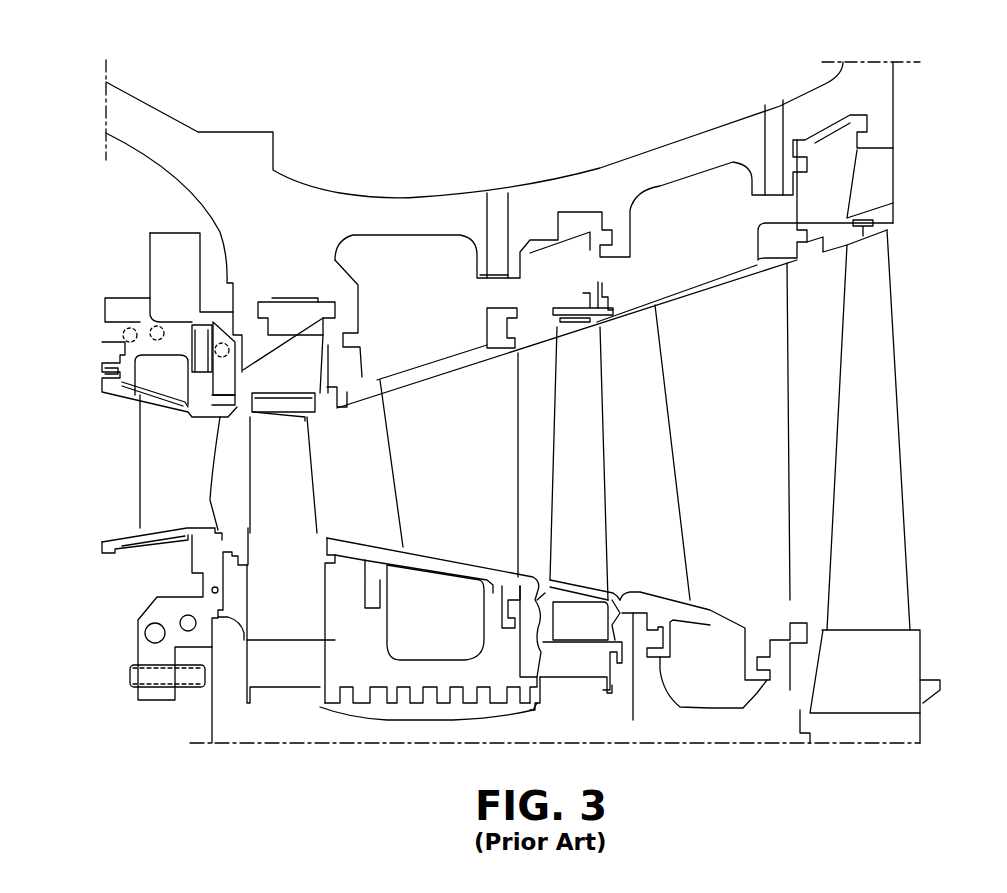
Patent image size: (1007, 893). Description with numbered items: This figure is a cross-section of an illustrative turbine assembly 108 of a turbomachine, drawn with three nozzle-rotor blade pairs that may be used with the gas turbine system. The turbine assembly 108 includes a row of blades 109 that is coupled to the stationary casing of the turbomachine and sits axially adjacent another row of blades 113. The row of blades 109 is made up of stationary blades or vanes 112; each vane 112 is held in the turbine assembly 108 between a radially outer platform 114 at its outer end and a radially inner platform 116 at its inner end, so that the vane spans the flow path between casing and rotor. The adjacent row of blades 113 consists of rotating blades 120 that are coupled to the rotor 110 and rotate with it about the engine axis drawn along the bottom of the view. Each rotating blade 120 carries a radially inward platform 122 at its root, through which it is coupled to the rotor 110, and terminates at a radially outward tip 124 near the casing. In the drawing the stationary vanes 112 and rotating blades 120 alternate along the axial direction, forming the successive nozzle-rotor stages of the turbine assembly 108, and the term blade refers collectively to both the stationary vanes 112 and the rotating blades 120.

The turbine assembly 108 is at (425, 185).
The row of blades 109 is at (464, 365).
The rotor 110 is at (578, 705).
The stationary vane 112 is at (432, 463).
The row of blades 113 is at (568, 393).
The radially outer platform 114 is at (425, 398).
The radially inner platform 116 is at (495, 567).
The rotating blade 120 is at (610, 490).
The radially inward platform 122 is at (570, 580).
The radially outward tip 124 is at (578, 330).